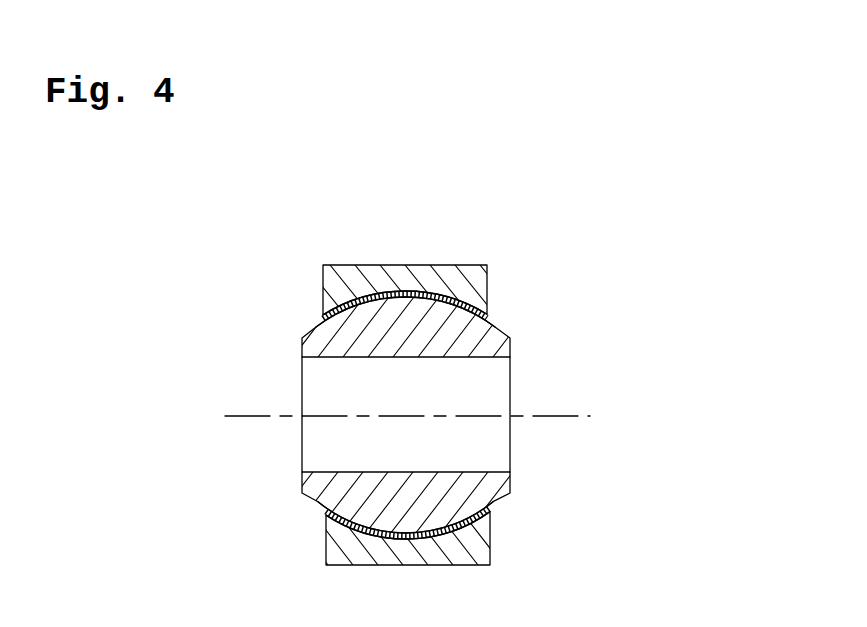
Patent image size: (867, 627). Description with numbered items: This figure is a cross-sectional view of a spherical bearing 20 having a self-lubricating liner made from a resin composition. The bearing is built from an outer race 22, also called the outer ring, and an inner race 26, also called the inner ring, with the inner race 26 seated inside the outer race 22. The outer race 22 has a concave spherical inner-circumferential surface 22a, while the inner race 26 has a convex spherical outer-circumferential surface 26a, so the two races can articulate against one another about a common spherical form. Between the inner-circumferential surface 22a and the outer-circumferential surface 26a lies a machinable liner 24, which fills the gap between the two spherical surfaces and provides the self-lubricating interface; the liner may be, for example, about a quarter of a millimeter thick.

The spherical bearing 20 is at (404, 381).
The outer race 22 is at (327, 278).
The concave spherical inner-circumferential surface 22a is at (477, 303).
The machinable liner 24 is at (332, 308).
The inner race 26 is at (315, 347).
The convex spherical outer-circumferential surface 26a is at (492, 333).